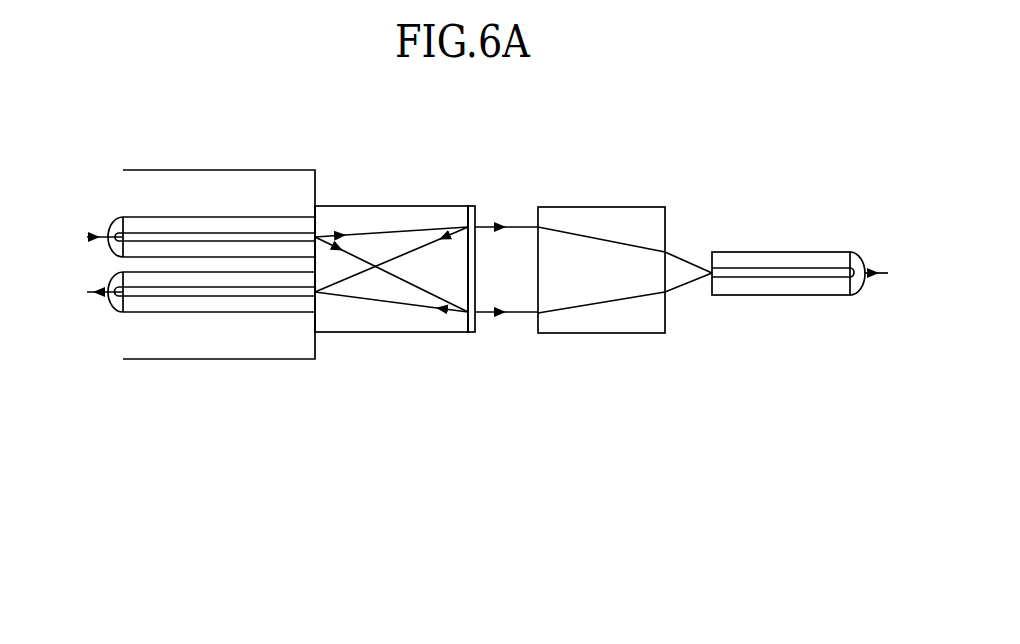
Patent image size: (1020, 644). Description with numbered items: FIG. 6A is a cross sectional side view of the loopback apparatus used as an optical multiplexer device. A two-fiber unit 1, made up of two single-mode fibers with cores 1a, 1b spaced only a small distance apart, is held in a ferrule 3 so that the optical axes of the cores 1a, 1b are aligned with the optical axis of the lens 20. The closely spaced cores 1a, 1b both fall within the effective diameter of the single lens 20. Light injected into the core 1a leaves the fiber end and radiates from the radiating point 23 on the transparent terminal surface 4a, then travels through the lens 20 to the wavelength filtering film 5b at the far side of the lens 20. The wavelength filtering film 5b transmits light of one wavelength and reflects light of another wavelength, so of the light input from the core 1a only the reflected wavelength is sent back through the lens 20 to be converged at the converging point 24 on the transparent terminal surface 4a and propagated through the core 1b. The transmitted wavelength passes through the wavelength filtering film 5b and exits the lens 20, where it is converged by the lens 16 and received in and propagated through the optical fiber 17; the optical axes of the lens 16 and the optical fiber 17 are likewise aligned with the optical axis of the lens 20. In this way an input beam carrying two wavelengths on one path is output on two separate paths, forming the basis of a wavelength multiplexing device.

The two-fiber unit 1 is at (156, 319).
The core 1a is at (152, 231).
The core 1b is at (228, 301).
The ferrule 3 is at (137, 360).
The transparent terminal surface 4a is at (318, 209).
The wavelength filtering film 5b is at (476, 333).
The lens 16 is at (652, 208).
The optical fiber 17 is at (762, 296).
The lens 20 is at (422, 333).
The radiating point 23 is at (320, 235).
The converging point 24 is at (319, 298).